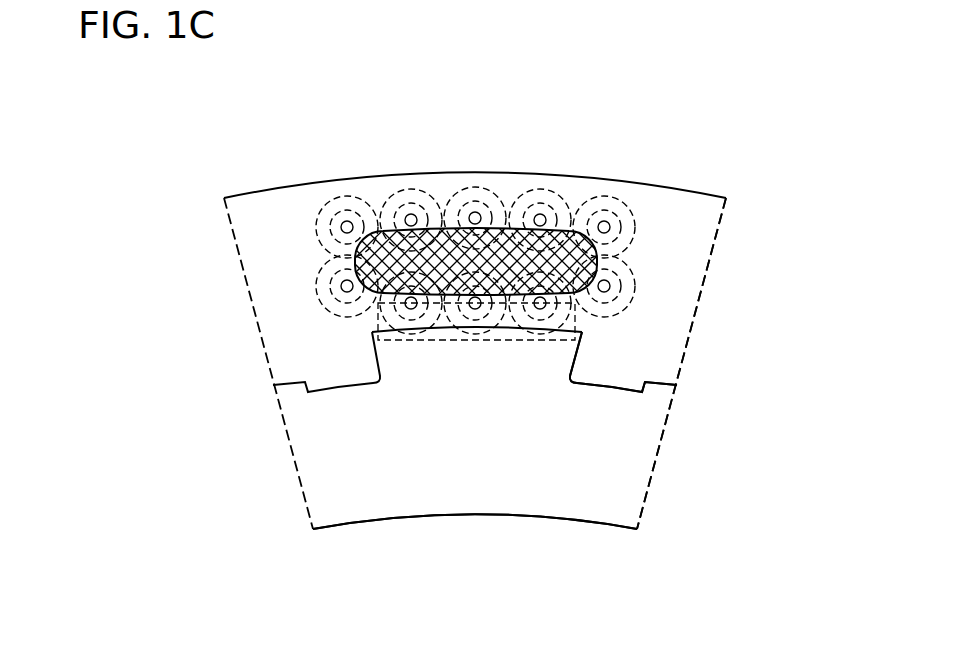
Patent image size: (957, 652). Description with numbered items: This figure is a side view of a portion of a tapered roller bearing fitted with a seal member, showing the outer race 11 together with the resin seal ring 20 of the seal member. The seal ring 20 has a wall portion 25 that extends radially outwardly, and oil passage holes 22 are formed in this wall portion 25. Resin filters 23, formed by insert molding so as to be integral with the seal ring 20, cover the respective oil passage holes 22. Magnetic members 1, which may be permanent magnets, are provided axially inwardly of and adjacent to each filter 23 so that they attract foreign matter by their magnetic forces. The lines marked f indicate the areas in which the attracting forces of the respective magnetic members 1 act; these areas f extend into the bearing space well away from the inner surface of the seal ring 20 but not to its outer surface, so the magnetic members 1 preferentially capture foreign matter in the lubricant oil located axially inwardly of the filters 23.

The seal ring 20 is at (637, 172).
The outer race 11 is at (325, 462).
The wall portion 25 is at (675, 280).
The oil passage holes 22 is at (480, 286).
The filters 23 is at (444, 268).
The magnetic members 1 is at (411, 214).
The areas in which attracting forces are applied f is at (543, 196).